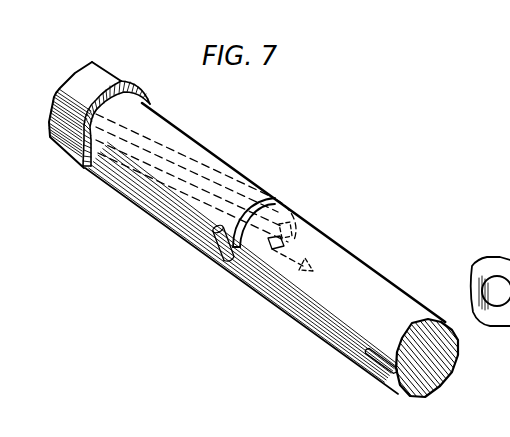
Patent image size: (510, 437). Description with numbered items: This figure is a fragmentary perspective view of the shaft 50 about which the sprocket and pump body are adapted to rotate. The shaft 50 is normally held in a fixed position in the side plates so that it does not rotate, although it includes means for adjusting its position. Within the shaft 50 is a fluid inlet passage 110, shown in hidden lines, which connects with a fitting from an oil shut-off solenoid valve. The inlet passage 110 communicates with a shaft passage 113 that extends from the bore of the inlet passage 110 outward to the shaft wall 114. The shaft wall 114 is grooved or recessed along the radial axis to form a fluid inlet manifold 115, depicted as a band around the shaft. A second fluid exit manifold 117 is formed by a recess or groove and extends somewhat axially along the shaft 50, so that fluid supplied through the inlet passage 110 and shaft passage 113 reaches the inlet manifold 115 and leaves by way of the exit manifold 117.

The shaft 50 is at (217, 156).
The fluid inlet passage 110 is at (80, 106).
The shaft passage 113 is at (300, 242).
The shaft wall 114 is at (366, 263).
The fluid inlet manifold 115 is at (275, 196).
The fluid exit manifold 117 is at (211, 239).